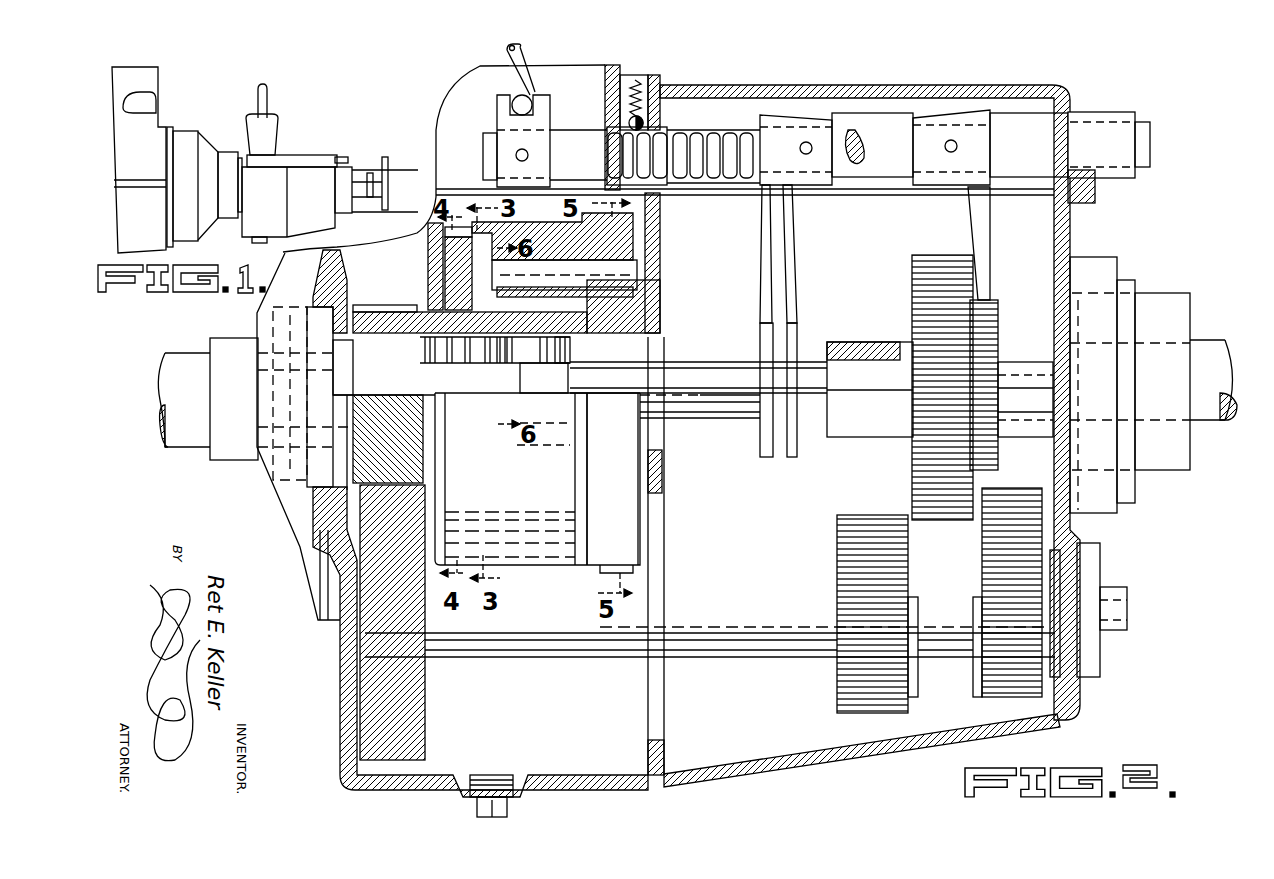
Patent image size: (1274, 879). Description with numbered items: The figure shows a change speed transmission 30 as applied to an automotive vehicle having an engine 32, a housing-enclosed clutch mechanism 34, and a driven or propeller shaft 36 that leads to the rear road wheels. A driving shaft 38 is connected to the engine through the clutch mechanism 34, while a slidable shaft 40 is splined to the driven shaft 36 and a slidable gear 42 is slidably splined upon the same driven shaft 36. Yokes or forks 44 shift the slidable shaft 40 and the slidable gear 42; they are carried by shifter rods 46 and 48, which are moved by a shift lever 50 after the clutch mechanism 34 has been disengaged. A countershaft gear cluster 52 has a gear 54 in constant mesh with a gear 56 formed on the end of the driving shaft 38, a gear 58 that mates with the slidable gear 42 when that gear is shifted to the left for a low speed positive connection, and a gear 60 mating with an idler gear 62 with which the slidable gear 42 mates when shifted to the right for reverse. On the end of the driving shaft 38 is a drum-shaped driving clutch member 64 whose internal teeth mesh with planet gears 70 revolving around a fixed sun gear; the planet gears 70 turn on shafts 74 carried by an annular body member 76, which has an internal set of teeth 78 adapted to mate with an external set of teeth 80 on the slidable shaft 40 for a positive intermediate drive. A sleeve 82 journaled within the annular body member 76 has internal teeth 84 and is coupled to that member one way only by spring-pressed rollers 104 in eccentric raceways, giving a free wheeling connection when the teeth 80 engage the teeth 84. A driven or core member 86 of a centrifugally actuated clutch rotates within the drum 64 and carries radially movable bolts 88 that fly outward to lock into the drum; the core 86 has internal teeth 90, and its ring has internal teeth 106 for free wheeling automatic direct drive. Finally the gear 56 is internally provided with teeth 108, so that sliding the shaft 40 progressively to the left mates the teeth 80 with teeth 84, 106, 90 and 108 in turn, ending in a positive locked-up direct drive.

In FIG. 1, the transmission 30 is at (290, 177).
In FIG. 2, the transmission 30 is at (823, 760).
In FIG. 1, the engine 32 is at (139, 160).
In FIG. 1, the housing-enclosed clutch mechanism 34 is at (180, 140).
In FIG. 1, the driven or propeller shaft 36 is at (367, 173).
In FIG. 2, the driven or propeller shaft 36 is at (1228, 318).
In FIG. 2, the driving shaft 38 is at (168, 386).
In FIG. 2, the slidable shaft 40 is at (747, 405).
In FIG. 2, the slidable gear 42 is at (923, 470).
In FIG. 2, the yokes or forks 44 is at (980, 218).
In FIG. 2, the shifter rod 46 is at (848, 130).
In FIG. 2, the shifter rod 48 is at (1007, 133).
In FIG. 1, the shift lever 50 is at (262, 87).
In FIG. 2, the shift lever 50 is at (522, 57).
In FIG. 2, the countershaft gear cluster 52 is at (720, 640).
In FIG. 2, the gear 54 is at (425, 712).
In FIG. 2, the gear 56 is at (420, 482).
In FIG. 2, the gear 58 is at (897, 698).
In FIG. 2, the gear 60 is at (1068, 695).
In FIG. 2, the idler gear 62 is at (1007, 490).
In FIG. 2, the drum-shaped driving clutch member 64 is at (533, 553).
In FIG. 2, the planet gears 70 is at (640, 242).
In FIG. 2, the shafts 74 is at (615, 268).
In FIG. 2, the annular body member 76 is at (637, 297).
In FIG. 2, the internal set of teeth 78 is at (590, 352).
In FIG. 2, the external set of teeth 80 is at (570, 381).
In FIG. 2, the sleeve 82 is at (545, 363).
In FIG. 2, the internal set of teeth 84 is at (503, 347).
In FIG. 2, the driven or core member 86 is at (432, 300).
In FIG. 2, the radially movable bolts 88 is at (428, 247).
In FIG. 2, the internal set of teeth 90 is at (450, 355).
In FIG. 2, the spring-pressed roller 104 is at (430, 278).
In FIG. 2, the internal set of teeth 106 is at (482, 343).
In FIG. 2, the set of teeth 108 is at (432, 372).